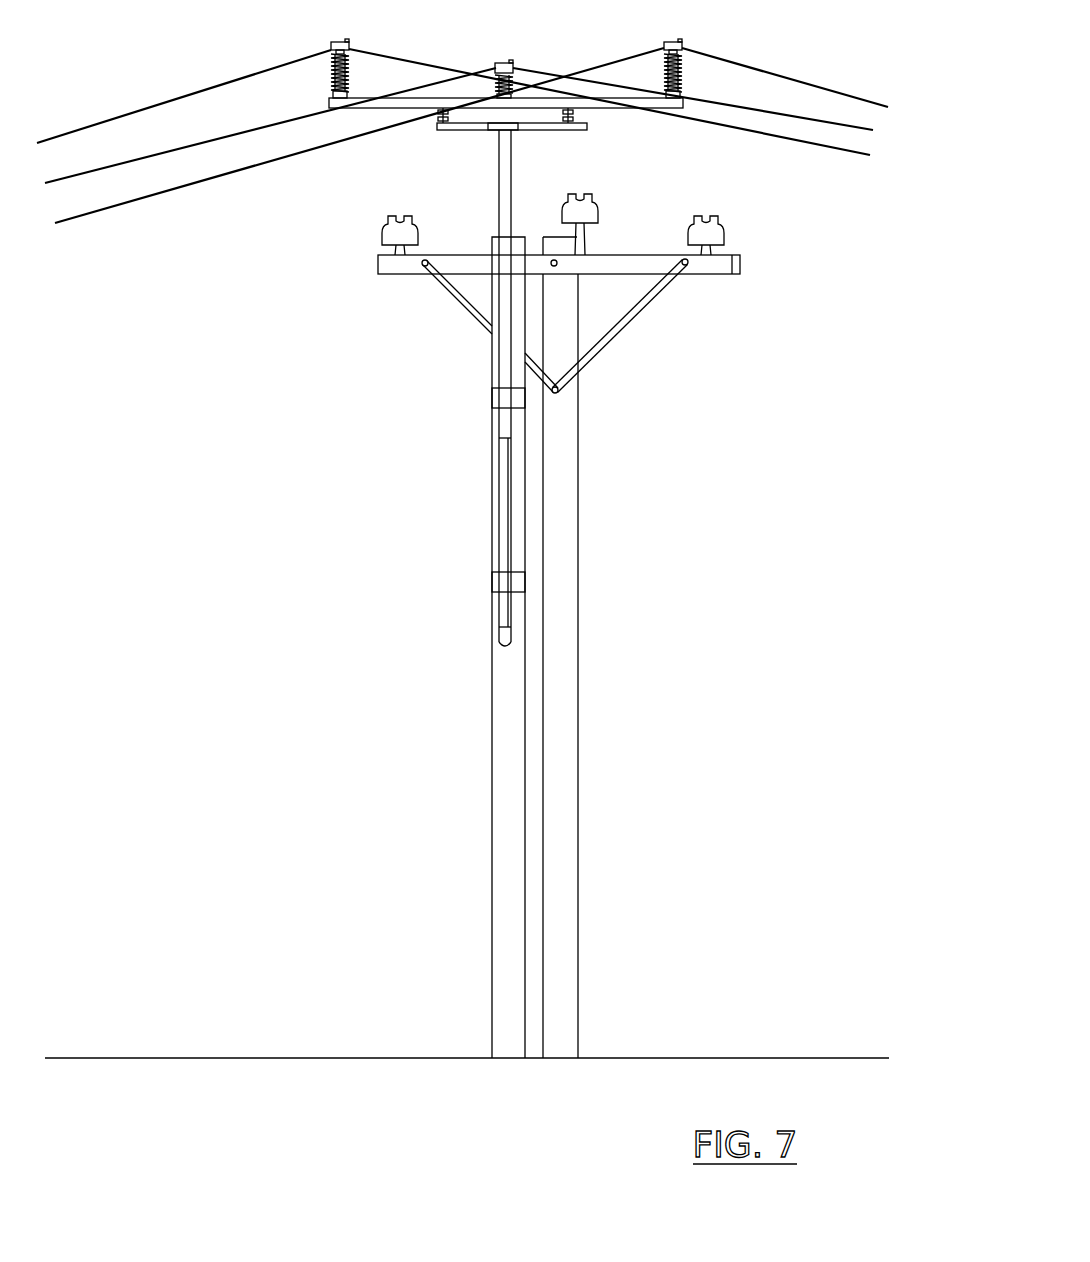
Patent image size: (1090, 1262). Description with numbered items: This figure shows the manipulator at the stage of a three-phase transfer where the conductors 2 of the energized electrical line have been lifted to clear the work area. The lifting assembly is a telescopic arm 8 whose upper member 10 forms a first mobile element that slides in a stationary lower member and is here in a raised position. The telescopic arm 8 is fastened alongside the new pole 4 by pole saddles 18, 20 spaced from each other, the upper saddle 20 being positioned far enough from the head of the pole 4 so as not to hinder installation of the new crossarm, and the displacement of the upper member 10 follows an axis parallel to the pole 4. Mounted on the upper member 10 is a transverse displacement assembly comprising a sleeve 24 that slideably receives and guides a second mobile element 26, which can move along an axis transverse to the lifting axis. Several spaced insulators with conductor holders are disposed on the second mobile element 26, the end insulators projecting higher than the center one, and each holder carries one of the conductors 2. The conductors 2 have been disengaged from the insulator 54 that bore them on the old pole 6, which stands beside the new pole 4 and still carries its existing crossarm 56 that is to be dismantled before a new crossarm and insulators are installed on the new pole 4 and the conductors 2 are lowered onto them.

The conductor 2 is at (183, 98).
The new pole 4 is at (496, 780).
The old pole 6 is at (570, 776).
The telescopic arm 8 is at (449, 594).
The upper member 10 is at (499, 175).
The pole saddle 18 is at (492, 578).
The pole saddle 20 is at (492, 392).
The sleeve 24 is at (493, 137).
The second mobile element 26 is at (610, 108).
The insulator 54 is at (392, 220).
The lower crossarm 56 is at (730, 275).